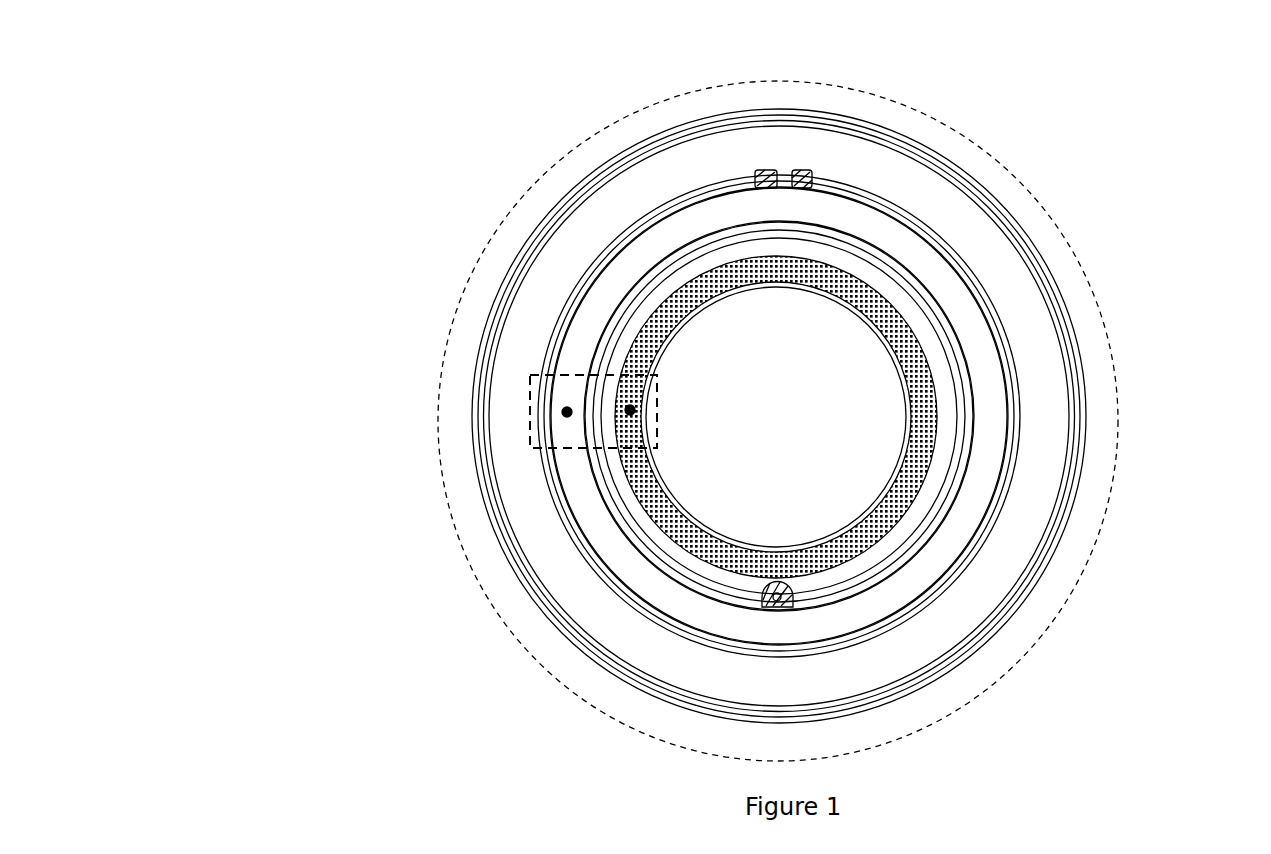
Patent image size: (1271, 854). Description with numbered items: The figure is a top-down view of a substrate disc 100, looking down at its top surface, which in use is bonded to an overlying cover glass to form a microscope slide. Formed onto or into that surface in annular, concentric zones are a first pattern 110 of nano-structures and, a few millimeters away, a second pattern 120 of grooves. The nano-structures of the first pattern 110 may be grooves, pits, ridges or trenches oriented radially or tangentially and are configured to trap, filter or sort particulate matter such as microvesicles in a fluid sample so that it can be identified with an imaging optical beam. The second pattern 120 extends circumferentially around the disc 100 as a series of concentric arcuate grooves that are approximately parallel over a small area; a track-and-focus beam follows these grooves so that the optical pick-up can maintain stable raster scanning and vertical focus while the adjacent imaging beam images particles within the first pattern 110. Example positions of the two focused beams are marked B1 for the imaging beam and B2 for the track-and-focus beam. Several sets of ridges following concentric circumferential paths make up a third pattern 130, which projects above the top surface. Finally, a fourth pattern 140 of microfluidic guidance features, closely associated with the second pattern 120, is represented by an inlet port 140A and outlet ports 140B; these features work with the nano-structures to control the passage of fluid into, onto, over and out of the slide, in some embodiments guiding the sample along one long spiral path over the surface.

The substrate disc 100 is at (537, 122).
The first pattern of nano-structures 110 is at (973, 327).
The second pattern of grooves 120 is at (893, 490).
The third pattern of ridges 130 is at (860, 243).
The fourth pattern of microfluidic guidance features 140 is at (383, 208).
The inlet port 140A is at (773, 597).
The outlet ports 140B is at (797, 170).
The imaging beam position B1 is at (565, 404).
The track-and-focus beam position B2 is at (629, 402).